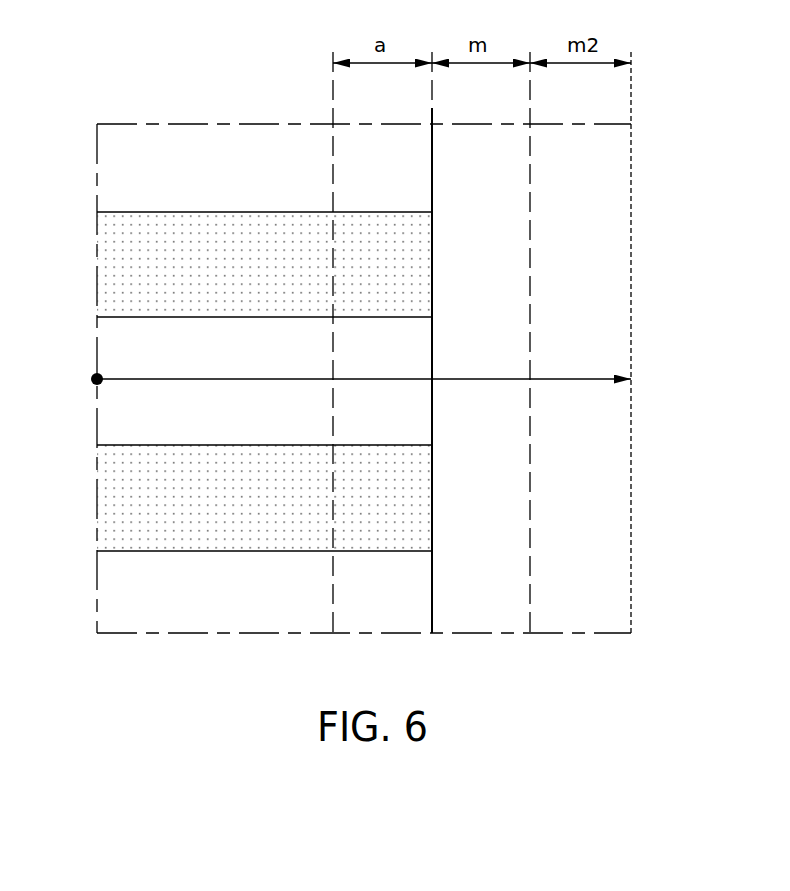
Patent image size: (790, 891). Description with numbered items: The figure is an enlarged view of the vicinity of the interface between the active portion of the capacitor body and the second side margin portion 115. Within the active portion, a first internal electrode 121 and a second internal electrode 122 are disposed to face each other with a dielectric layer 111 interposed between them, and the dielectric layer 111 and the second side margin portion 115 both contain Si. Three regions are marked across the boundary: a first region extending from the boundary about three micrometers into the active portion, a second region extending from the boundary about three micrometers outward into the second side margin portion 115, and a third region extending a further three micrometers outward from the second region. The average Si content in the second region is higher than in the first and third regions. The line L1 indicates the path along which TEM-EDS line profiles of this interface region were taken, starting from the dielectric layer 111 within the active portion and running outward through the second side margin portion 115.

The second side margin portion 115 is at (607, 578).
The dielectric layer 111 is at (118, 350).
The second internal electrode 122 is at (112, 254).
The first internal electrode 121 is at (112, 490).
The line profile path L1 is at (596, 379).